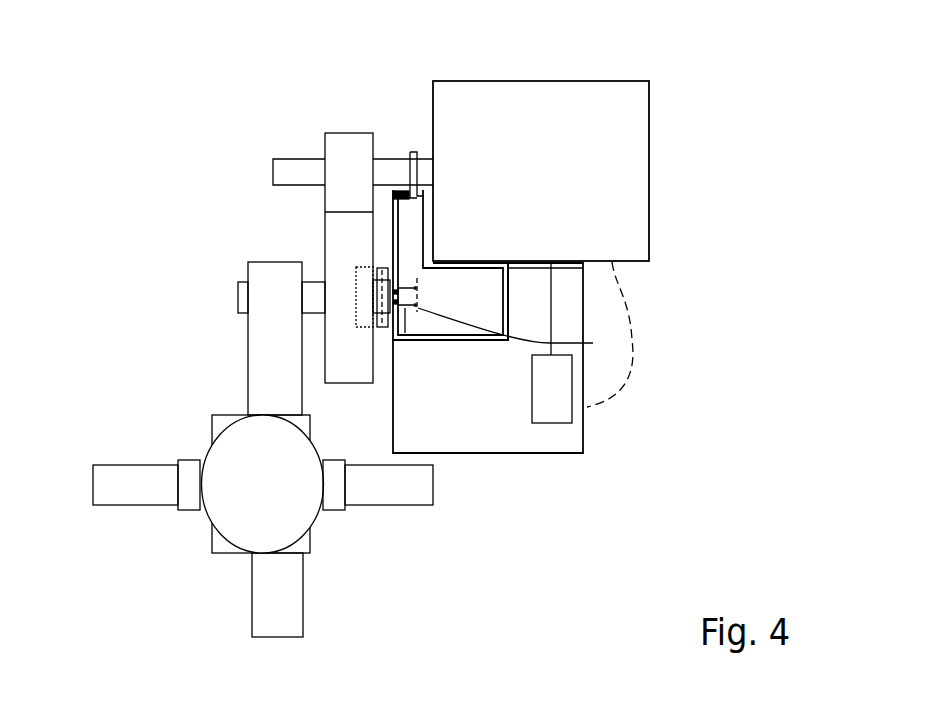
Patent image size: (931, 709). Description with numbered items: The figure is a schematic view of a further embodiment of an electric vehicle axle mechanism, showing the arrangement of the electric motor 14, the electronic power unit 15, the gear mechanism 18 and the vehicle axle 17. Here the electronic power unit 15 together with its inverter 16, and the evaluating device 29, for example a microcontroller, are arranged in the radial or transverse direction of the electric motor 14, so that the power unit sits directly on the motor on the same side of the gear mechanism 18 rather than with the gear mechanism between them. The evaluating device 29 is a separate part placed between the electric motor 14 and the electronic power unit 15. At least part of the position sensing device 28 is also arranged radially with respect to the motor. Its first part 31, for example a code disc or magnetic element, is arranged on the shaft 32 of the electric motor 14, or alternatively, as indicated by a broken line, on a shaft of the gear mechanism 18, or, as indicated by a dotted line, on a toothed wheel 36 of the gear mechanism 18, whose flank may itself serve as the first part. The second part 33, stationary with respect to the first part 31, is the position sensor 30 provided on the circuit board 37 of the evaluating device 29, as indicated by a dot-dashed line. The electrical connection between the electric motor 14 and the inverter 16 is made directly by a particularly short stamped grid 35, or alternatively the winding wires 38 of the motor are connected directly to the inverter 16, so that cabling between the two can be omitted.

The electric motor 14 is at (595, 92).
The electronic power unit 15 is at (538, 462).
The inverter 16 is at (557, 377).
The vehicle axle 17 is at (220, 517).
The gear mechanism 18 is at (210, 365).
The position sensing device 28 is at (367, 333).
The evaluating device 29 is at (403, 223).
The position sensor 30 is at (390, 192).
The first part of the position sensing device 31 is at (412, 150).
The shaft 32 is at (298, 170).
The second part of the position sensing device 33 is at (408, 283).
The stamped grid 35 is at (552, 288).
The toothed wheel 36 is at (347, 142).
The circuit board 37 is at (521, 335).
The winding wires 38 is at (620, 302).